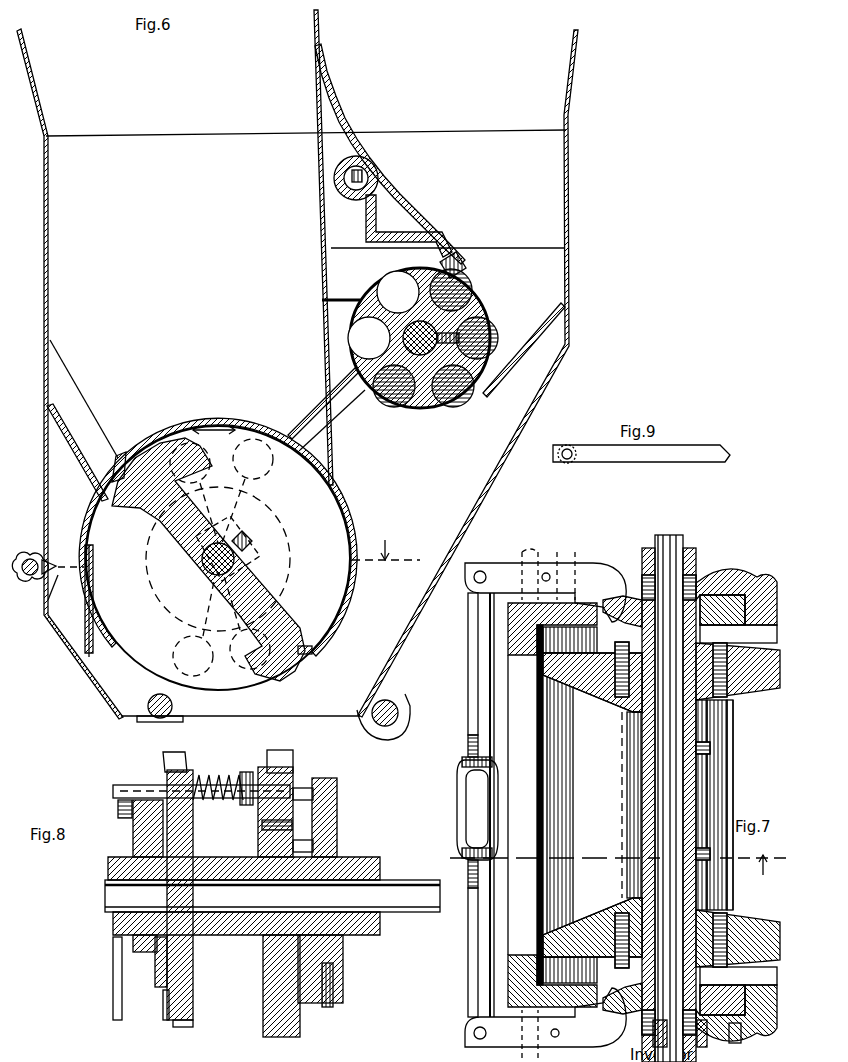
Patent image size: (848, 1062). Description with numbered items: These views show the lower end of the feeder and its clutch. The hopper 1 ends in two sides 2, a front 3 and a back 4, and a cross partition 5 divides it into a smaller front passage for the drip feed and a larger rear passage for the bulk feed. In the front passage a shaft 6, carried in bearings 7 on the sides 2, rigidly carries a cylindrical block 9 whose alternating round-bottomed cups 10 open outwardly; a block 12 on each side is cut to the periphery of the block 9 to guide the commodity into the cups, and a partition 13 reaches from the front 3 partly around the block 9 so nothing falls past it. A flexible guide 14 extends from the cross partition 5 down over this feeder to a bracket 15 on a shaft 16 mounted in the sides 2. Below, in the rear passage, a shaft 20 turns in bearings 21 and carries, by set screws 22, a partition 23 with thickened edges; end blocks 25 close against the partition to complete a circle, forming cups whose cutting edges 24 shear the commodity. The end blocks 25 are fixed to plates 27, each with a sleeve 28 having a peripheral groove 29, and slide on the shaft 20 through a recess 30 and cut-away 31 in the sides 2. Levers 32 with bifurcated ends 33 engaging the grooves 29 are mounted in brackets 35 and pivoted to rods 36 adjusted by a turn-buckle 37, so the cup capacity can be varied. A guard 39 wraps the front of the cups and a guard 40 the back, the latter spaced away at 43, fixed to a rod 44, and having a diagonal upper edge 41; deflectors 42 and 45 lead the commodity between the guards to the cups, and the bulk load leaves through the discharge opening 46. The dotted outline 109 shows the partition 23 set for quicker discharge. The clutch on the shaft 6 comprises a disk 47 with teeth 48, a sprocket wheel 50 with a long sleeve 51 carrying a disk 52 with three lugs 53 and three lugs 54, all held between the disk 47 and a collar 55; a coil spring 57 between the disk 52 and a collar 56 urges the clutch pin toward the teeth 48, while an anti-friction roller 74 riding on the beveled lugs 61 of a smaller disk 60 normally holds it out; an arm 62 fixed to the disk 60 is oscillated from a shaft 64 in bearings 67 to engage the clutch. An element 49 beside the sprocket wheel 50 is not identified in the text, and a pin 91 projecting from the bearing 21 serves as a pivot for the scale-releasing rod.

In FIG. 6, the hopper 1 is at (567, 78).
In FIG. 6, the sides 2 is at (306, 173).
In FIG. 7, the sides 2 is at (515, 628).
In FIG. 6, the front 3 is at (566, 246).
In FIG. 6, the back 4 is at (45, 305).
In FIG. 7, the back 4 is at (488, 690).
In FIG. 6, the cross partition 5 is at (318, 94).
In FIG. 6, the shaft 6 is at (385, 382).
In FIG. 8, the shaft 6 is at (395, 914).
In FIG. 6, the bearings 7 is at (386, 550).
In FIG. 6, the cylindrical block 9 is at (462, 296).
In FIG. 6, the round bottomed cups 10 is at (475, 285).
In FIG. 6, the block 12 is at (550, 266).
In FIG. 6, the partition 13 is at (495, 370).
In FIG. 6, the partition or guide 14 is at (432, 208).
In FIG. 6, the bracket 15 is at (452, 245).
In FIG. 6, the shaft 16 is at (344, 180).
In FIG. 6, the shaft 20 is at (210, 566).
In FIG. 7, the shaft 20 is at (668, 535).
In FIG. 7, the bearings 21 is at (698, 560).
In FIG. 6, the set screws 22 is at (250, 536).
In FIG. 7, the set screws 22 is at (710, 746).
In FIG. 6, the partition 23 is at (248, 568).
In FIG. 7, the partition 23 is at (712, 785).
In FIG. 6, the cutting edges 24 is at (104, 518).
In FIG. 7, the cutting edges 24 is at (612, 828).
In FIG. 6, the end blocks 25 is at (318, 517).
In FIG. 7, the end blocks 25 is at (548, 676).
In FIG. 6, the plates 27 is at (290, 550).
In FIG. 7, the plates 27 is at (748, 637).
In FIG. 7, the sleeve 28 is at (755, 558).
In FIG. 7, the peripheral groove 29 is at (718, 600).
In FIG. 6, the recess 30 is at (182, 435).
In FIG. 7, the recess 30 is at (523, 563).
In FIG. 7, the cut away 31 is at (562, 565).
In FIG. 6, the levers 32 is at (52, 580).
In FIG. 7, the levers 32 is at (479, 1055).
In FIG. 7, the bifurcated ends 33 is at (618, 602).
In FIG. 7, the brackets 35 is at (470, 1003).
In FIG. 6, the rods 36 is at (30, 556).
In FIG. 7, the rods 36 is at (467, 720).
In FIG. 6, the turn-buckle 37 is at (38, 582).
In FIG. 7, the turn-buckle 37 is at (456, 805).
In FIG. 6, the guard 39 is at (343, 518).
In FIG. 6, the guard 40 is at (90, 528).
In FIG. 6, the diagonal upper edge 41 is at (130, 442).
In FIG. 6, the guide or deflector 42 is at (98, 408).
In FIG. 6, the spaced portion of guard 43 is at (165, 693).
In FIG. 6, the rod 44 is at (156, 722).
In FIG. 6, the guide or deflector 45 is at (288, 390).
In FIG. 6, the discharge opening 46 is at (240, 706).
In FIG. 8, the disk 47 is at (337, 824).
In FIG. 8, the teeth 48 is at (305, 782).
In FIG. 8, the screw 49 is at (333, 1005).
In FIG. 8, the sprocket wheel 50 is at (290, 1030).
In FIG. 8, the long sleeve 51 is at (255, 937).
In FIG. 8, the disk 52 is at (198, 983).
In FIG. 8, the radially extending lugs 53 is at (180, 745).
In FIG. 8, the lugs 54 is at (162, 1000).
In FIG. 9, the collar 55 is at (641, 465).
In FIG. 8, the collar 55 is at (115, 795).
In FIG. 8, the collar 56 is at (243, 765).
In FIG. 8, the coil spring 57 is at (232, 773).
In FIG. 8, the smaller disk 60 is at (150, 845).
In FIG. 8, the beveled lugs 61 is at (140, 826).
In FIG. 8, the arm 62 is at (111, 985).
In FIG. 6, the shaft 64 is at (395, 716).
In FIG. 6, the bearings 67 is at (400, 682).
In FIG. 8, the anti-friction roller 74 is at (116, 806).
In FIG. 7, the pin 91 is at (742, 1042).
In FIG. 6, the dotted outline position 109 is at (230, 478).